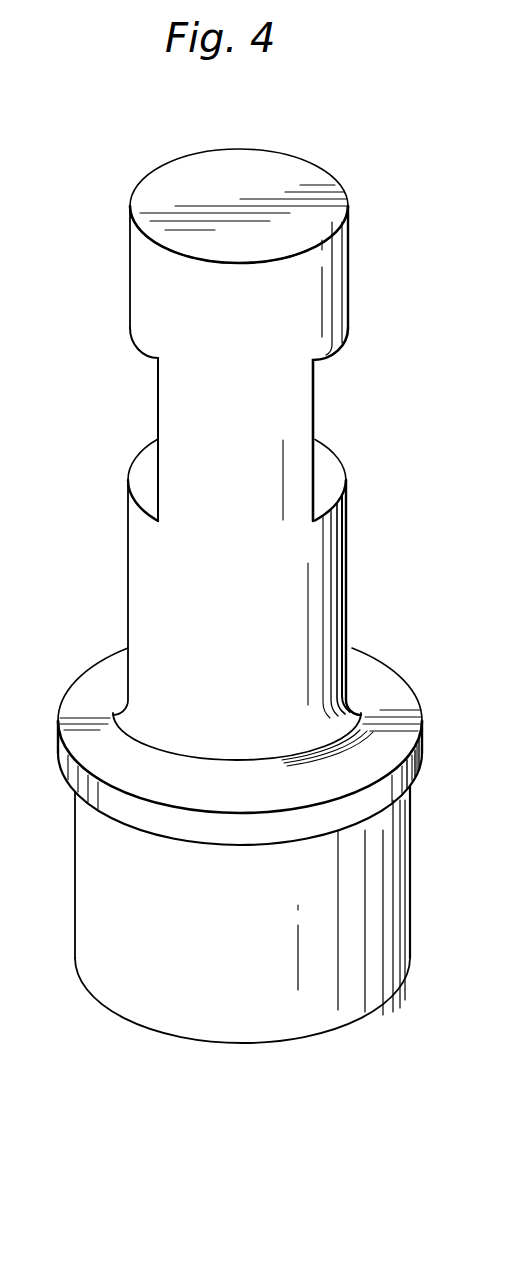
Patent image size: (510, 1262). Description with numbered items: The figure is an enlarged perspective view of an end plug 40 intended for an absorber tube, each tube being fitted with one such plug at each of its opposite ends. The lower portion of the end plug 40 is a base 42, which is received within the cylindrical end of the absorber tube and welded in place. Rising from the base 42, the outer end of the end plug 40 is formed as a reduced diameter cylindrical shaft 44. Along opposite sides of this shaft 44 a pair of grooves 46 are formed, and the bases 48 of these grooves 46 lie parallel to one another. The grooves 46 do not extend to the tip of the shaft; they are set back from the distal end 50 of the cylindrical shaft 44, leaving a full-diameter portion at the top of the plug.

The end plug 40 is at (128, 548).
The base 42 is at (204, 1023).
The cylindrical shaft 44 is at (298, 623).
The grooves 46 is at (157, 361).
The bases of the grooves 48 is at (315, 368).
The distal end 50 is at (188, 178).